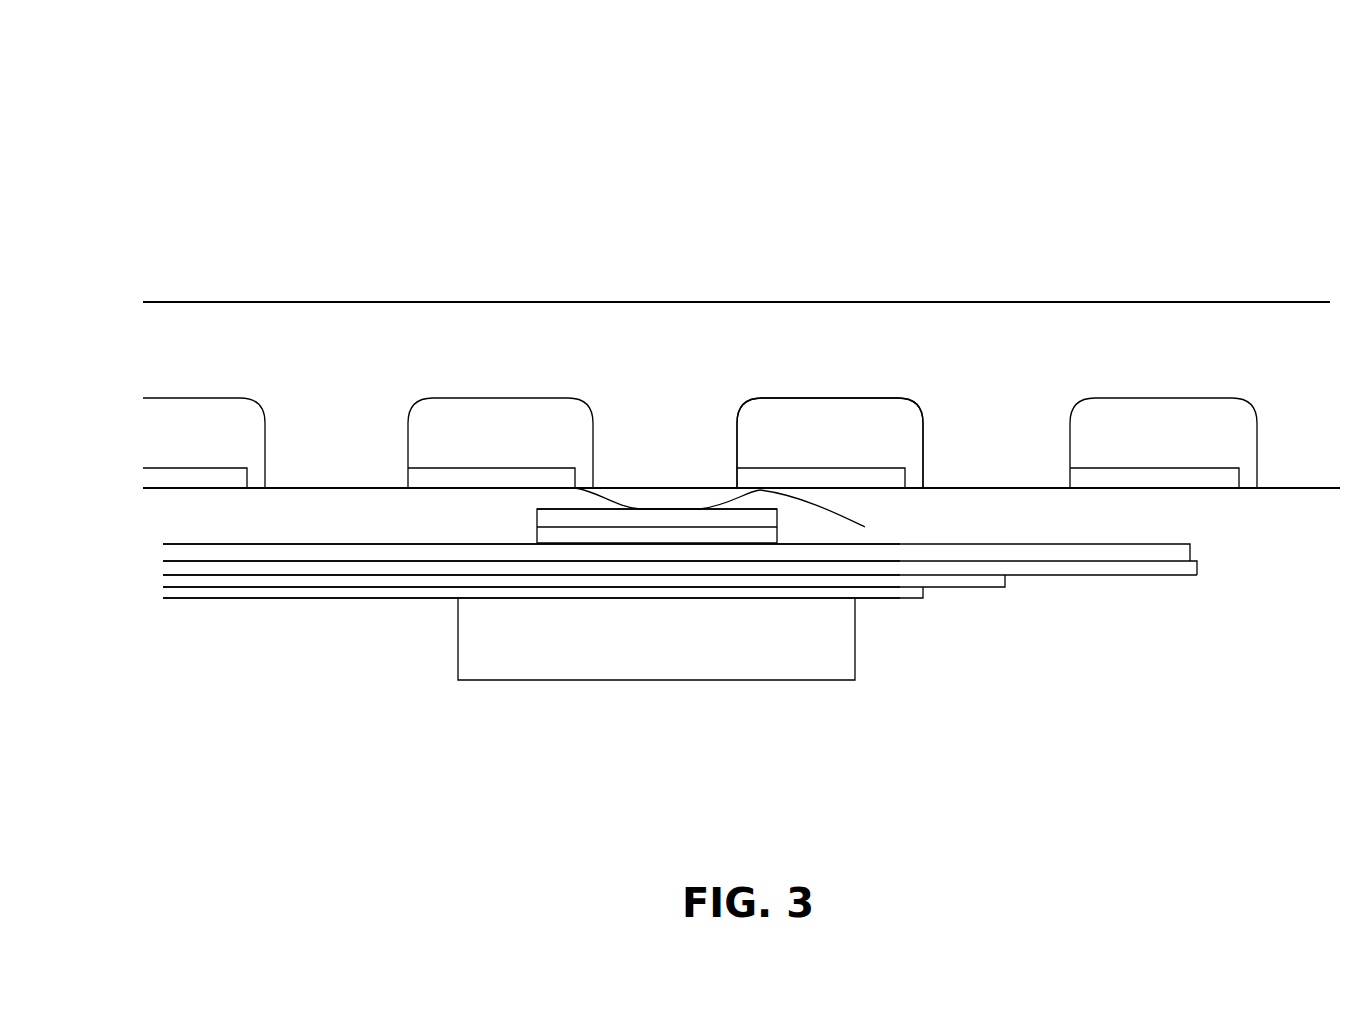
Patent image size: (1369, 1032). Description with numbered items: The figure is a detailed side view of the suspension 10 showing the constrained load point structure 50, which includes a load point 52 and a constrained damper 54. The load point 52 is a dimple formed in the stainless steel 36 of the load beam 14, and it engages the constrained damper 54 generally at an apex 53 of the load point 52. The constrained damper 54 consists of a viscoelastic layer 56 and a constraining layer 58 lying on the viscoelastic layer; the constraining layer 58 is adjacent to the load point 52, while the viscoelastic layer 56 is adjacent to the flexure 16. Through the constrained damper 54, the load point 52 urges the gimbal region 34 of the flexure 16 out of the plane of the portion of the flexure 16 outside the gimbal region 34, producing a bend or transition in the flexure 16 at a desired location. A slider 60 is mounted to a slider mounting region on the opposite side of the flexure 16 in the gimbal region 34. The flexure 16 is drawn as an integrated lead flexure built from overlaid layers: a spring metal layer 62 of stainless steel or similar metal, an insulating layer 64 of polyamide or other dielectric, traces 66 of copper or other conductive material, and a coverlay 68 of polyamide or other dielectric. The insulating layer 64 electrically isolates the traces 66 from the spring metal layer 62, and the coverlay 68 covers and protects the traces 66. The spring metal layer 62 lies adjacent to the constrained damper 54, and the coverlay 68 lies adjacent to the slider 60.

The suspension 10 is at (470, 186).
The load beam 14 is at (682, 362).
The flexure 16 is at (567, 552).
The gimbal region 34 is at (420, 615).
The stainless steel 36 is at (266, 342).
The constrained load point structure 50 is at (713, 460).
The load point 52 is at (841, 512).
The apex 53 is at (663, 502).
The constrained damper 54 is at (534, 518).
The viscoelastic layer 56 is at (568, 537).
The constraining layer 58 is at (604, 517).
The slider 60 is at (656, 639).
The spring metal layer 62 is at (995, 552).
The insulating layer 64 is at (1008, 568).
The traces 66 is at (968, 582).
The coverlay 68 is at (908, 595).